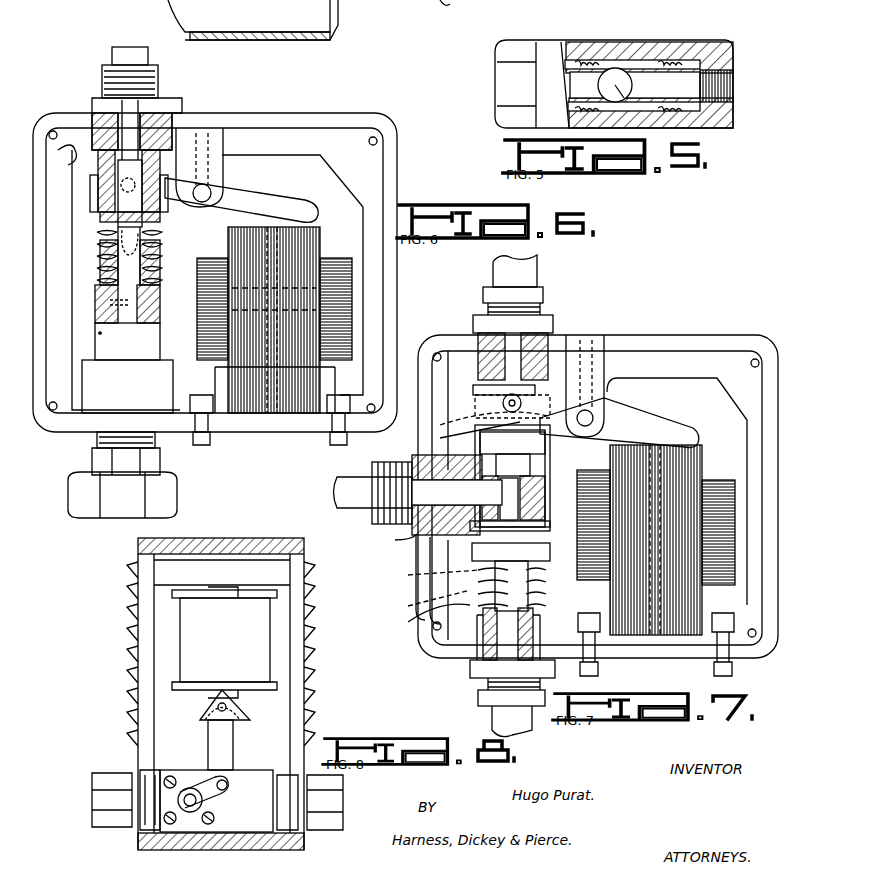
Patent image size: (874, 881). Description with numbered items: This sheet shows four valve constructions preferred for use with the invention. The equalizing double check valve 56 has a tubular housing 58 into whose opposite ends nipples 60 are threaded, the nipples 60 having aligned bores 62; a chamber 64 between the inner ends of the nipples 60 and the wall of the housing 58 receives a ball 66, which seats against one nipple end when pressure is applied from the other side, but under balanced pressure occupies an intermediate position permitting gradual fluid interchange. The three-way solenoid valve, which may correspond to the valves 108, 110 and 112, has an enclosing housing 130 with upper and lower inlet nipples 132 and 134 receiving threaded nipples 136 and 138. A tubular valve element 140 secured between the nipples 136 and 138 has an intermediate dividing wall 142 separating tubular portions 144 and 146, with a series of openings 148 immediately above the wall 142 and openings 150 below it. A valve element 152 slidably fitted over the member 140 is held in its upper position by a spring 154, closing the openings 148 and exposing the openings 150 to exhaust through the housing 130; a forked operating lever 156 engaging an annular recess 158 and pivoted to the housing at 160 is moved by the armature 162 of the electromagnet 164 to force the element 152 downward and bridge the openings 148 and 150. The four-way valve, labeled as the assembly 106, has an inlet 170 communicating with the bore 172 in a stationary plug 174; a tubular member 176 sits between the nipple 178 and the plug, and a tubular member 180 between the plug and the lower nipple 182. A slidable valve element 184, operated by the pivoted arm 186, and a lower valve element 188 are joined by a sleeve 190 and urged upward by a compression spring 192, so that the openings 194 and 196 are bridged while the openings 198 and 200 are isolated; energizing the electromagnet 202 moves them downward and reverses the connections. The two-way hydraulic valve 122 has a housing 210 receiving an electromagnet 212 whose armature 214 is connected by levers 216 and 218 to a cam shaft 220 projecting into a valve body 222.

In FIG. 5, the double check valve 56 is at (625, 40).
In FIG. 5, the tubular housing 58 is at (660, 42).
In FIG. 5, the nipples 60 is at (582, 55).
In FIG. 5, the bores 62 is at (575, 80).
In FIG. 5, the chamber 64 is at (612, 68).
In FIG. 5, the ball 66 is at (620, 96).
In FIG. 7, the housing 106 is at (648, 333).
In FIG. 6, the three-way valve 108 is at (292, 80).
In FIG. 6, the three-way valve 110 is at (275, 102).
In FIG. 6, the three-way valve 112 is at (275, 117).
In FIG. 8, the two-way hydraulic valve 122 is at (228, 842).
In FIG. 6, the enclosing housing 130 is at (360, 113).
In FIG. 6, the upper inlet nipple 132 is at (178, 112).
In FIG. 6, the lower inlet nipple 134 is at (100, 415).
In FIG. 6, the threaded nipple 136 is at (98, 70).
In FIG. 6, the threaded nipple 138 is at (92, 485).
In FIG. 6, the tubular valve element 140 is at (145, 240).
In FIG. 6, the intermediate dividing wall 142 is at (148, 248).
In FIG. 6, the tubular portion 144 is at (92, 170).
In FIG. 6, the tubular portion 146 is at (150, 280).
In FIG. 6, the openings 148 is at (97, 240).
In FIG. 6, the openings 150 is at (100, 262).
In FIG. 6, the valve element 152 is at (100, 215).
In FIG. 6, the spring 154 is at (95, 290).
In FIG. 6, the forked operating lever 156 is at (277, 196).
In FIG. 6, the annular recess 158 is at (100, 190).
In FIG. 6, the pivot 160 is at (208, 190).
In FIG. 6, the armature 162 is at (300, 220).
In FIG. 6, the electromagnet 164 is at (310, 355).
In FIG. 7, the inlet 170 is at (398, 536).
In FIG. 7, the bore 172 is at (545, 485).
In FIG. 7, the plug 174 is at (552, 535).
In FIG. 7, the tubular member 176 is at (530, 462).
In FIG. 7, the nipple 178 is at (548, 330).
In FIG. 7, the tubular member 180 is at (546, 600).
In FIG. 7, the lower nipple 182 is at (548, 675).
In FIG. 7, the valve element 184 is at (470, 428).
In FIG. 7, the operating arm 186 is at (632, 418).
In FIG. 7, the valve element 188 is at (548, 570).
In FIG. 7, the sleeve 190 is at (560, 520).
In FIG. 7, the compression spring 192 is at (421, 617).
In FIG. 7, the openings 194 is at (440, 432).
In FIG. 7, the openings 196 is at (535, 440).
In FIG. 7, the openings 198 is at (426, 575).
In FIG. 7, the openings 200 is at (421, 602).
In FIG. 7, the electromagnet 202 is at (682, 568).
In FIG. 8, the enclosing housing 210 is at (238, 538).
In FIG. 8, the electromagnet 212 is at (255, 625).
In FIG. 8, the armature 214 is at (252, 708).
In FIG. 8, the lever 216 is at (222, 740).
In FIG. 8, the lever 218 is at (215, 810).
In FIG. 8, the cam shaft 220 is at (190, 812).
In FIG. 8, the valve body 222 is at (270, 790).